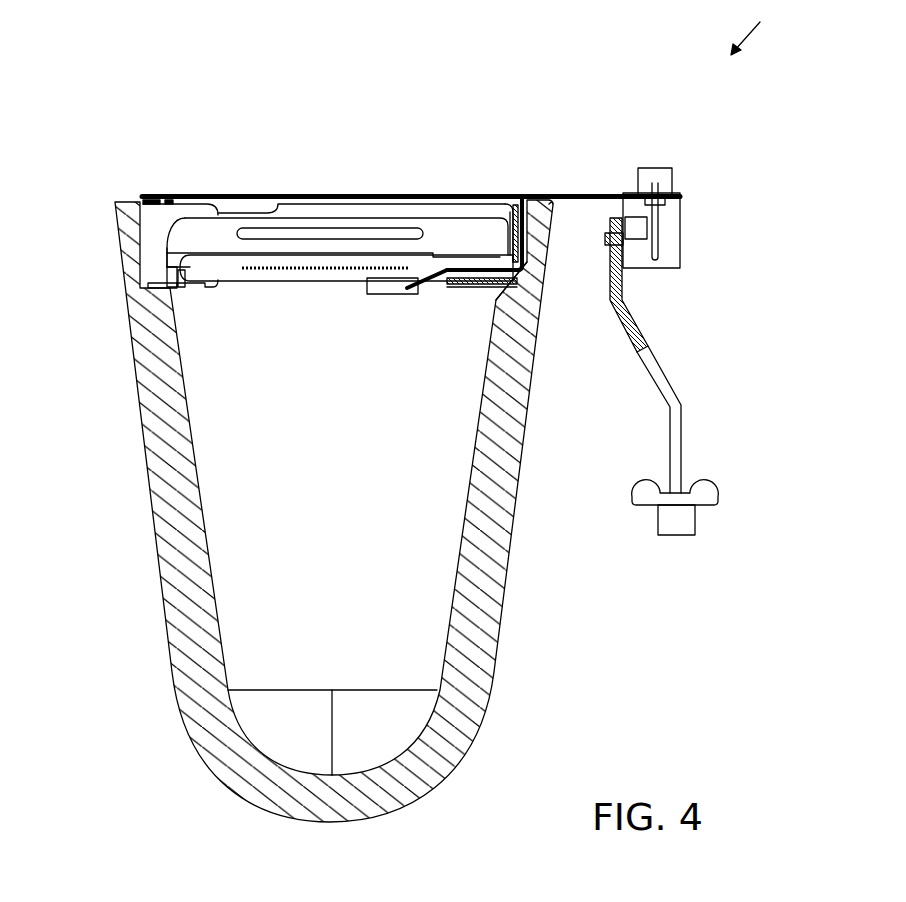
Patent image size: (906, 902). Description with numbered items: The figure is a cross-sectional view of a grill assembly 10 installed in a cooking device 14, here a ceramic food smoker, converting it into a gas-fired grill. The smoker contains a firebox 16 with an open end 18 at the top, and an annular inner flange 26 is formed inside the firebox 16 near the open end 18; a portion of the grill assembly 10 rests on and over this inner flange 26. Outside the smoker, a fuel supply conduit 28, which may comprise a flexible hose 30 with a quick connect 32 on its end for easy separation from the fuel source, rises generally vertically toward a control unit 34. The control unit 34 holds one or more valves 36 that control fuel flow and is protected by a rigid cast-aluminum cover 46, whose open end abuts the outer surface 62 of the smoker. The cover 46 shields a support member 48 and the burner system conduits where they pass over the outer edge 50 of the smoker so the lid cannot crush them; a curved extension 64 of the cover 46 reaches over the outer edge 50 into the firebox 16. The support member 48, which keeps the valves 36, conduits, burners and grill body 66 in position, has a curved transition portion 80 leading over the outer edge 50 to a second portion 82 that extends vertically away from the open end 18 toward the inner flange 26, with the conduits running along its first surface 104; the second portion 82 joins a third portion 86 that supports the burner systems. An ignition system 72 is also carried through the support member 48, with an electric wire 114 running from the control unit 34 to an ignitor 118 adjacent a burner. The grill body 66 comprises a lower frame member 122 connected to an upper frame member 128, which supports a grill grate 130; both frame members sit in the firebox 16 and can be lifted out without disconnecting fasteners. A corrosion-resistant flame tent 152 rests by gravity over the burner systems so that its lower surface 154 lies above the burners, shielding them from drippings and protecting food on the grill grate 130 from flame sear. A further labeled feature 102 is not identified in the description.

The grill assembly 10 is at (759, 34).
The cooking device 14 is at (510, 610).
The firebox 16 is at (342, 502).
The open end 18 is at (141, 196).
The inner flange 26 is at (150, 288).
The fuel supply conduit 28 is at (665, 385).
The flexible hose 30 is at (622, 300).
The quick connect 32 is at (695, 520).
The control unit 34 is at (680, 230).
The valve 36 is at (672, 170).
The cover 46 is at (560, 196).
The support member 48 is at (535, 240).
The outer edge 50 is at (553, 205).
The outer surface 62 is at (553, 203).
The curved extension 64 is at (515, 205).
The grill body 66 is at (190, 225).
The ignition system 72 is at (412, 290).
The curved transition portion 80 is at (521, 240).
The second portion 82 is at (505, 250).
The third portion 86 is at (447, 282).
The upper shell 102 is at (470, 228).
The first surface 104 is at (511, 212).
The electric wire 114 is at (482, 287).
The ignitor 118 is at (385, 295).
The lower frame member 122 is at (177, 288).
The upper frame member 128 is at (305, 215).
The grill grate 130 is at (192, 200).
The flame tent 152 is at (167, 255).
The lower surface 154 is at (167, 277).